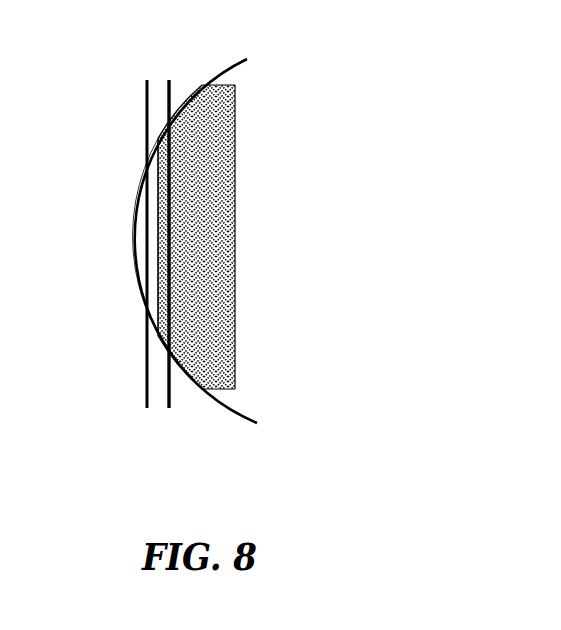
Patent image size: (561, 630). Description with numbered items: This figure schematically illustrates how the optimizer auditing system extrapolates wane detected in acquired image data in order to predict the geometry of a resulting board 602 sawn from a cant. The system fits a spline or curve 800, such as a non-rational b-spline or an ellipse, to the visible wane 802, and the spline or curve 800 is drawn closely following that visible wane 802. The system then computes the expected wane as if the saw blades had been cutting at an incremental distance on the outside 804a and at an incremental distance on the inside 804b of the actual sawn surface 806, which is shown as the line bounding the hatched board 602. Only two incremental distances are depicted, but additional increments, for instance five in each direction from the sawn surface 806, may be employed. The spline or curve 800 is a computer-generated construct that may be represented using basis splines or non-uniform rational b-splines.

The spline or curve 800 is at (216, 72).
The visible wane 802 is at (190, 97).
The board 602 is at (235, 207).
The actual sawn surface 806 is at (158, 186).
The incremental distance on the outside 804a is at (170, 391).
The incremental distance on the inside 804b is at (147, 387).